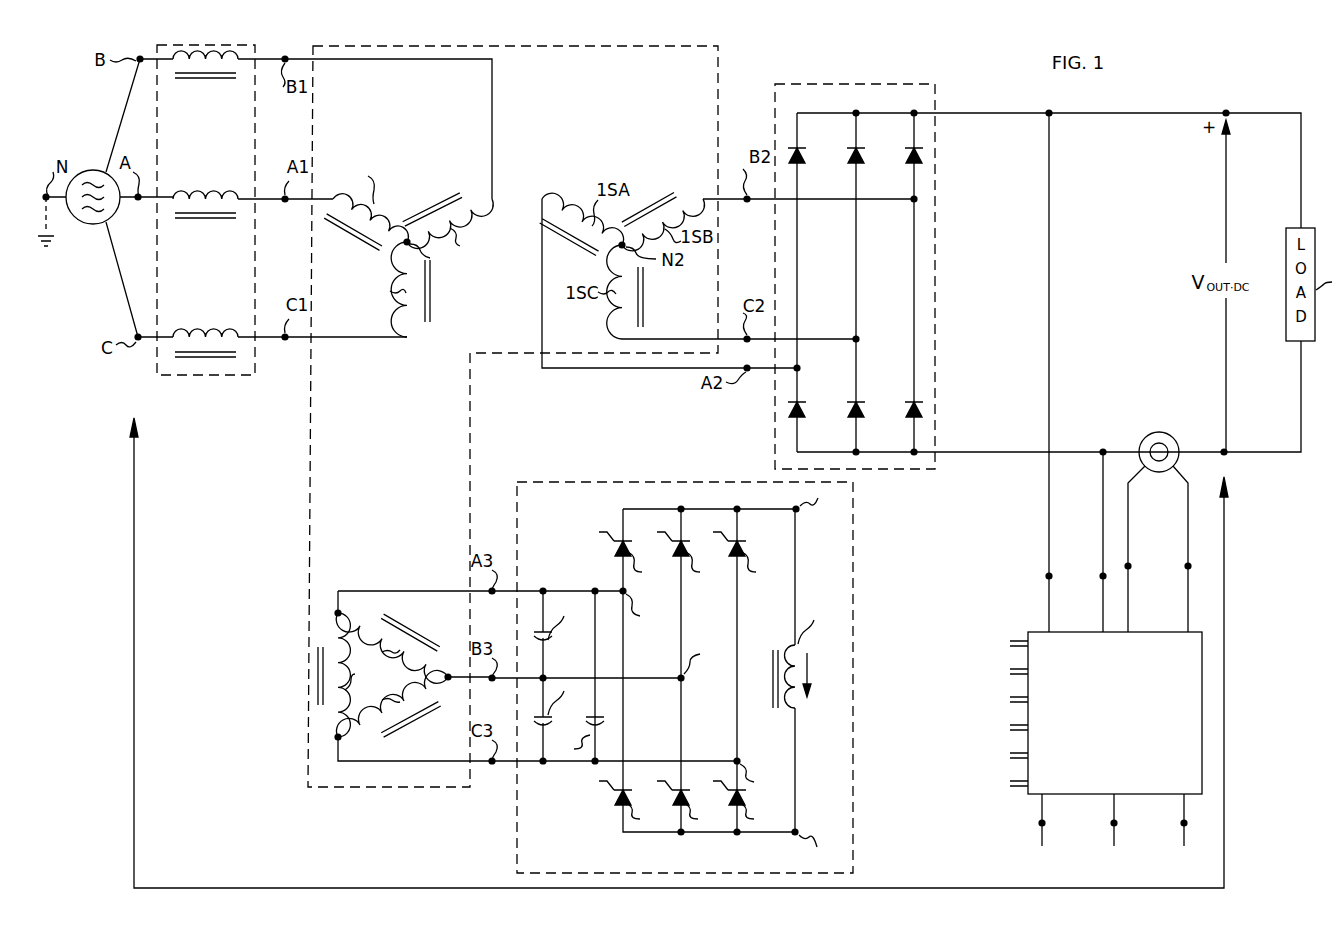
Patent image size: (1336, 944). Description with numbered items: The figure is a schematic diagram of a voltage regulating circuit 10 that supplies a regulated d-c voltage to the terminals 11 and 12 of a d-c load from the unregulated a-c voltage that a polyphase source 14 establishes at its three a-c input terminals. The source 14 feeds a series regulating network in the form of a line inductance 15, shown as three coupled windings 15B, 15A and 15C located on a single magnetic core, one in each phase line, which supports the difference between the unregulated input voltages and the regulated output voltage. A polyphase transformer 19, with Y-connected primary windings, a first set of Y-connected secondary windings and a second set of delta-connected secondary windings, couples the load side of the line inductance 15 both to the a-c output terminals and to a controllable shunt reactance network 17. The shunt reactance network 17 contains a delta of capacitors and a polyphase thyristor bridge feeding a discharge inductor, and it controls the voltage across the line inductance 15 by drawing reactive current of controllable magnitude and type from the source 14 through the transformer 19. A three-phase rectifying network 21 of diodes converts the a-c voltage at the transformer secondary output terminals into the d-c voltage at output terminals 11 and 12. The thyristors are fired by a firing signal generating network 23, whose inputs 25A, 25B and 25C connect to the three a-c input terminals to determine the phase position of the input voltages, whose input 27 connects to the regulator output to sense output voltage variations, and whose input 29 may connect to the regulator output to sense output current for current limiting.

The voltage regulating circuit 10 is at (666, 888).
The d-c output terminal 11 is at (1229, 110).
The d-c output terminal 12 is at (1227, 449).
The polyphase source 14 is at (93, 170).
The line inductance 15 is at (206, 232).
The coupled winding 15A is at (215, 198).
The coupled winding 15B is at (173, 62).
The coupled winding 15C is at (215, 336).
The controllable shunt reactance network 17 is at (853, 792).
The polyphase transformer 19 is at (308, 740).
The three-phase rectifying network 21 is at (905, 469).
The firing signal generating network 23 is at (1028, 632).
The input 25A is at (1039, 820).
The input 25B is at (1111, 820).
The input 25C is at (1183, 820).
The input 27 is at (1049, 572).
The input 29 is at (1128, 562).